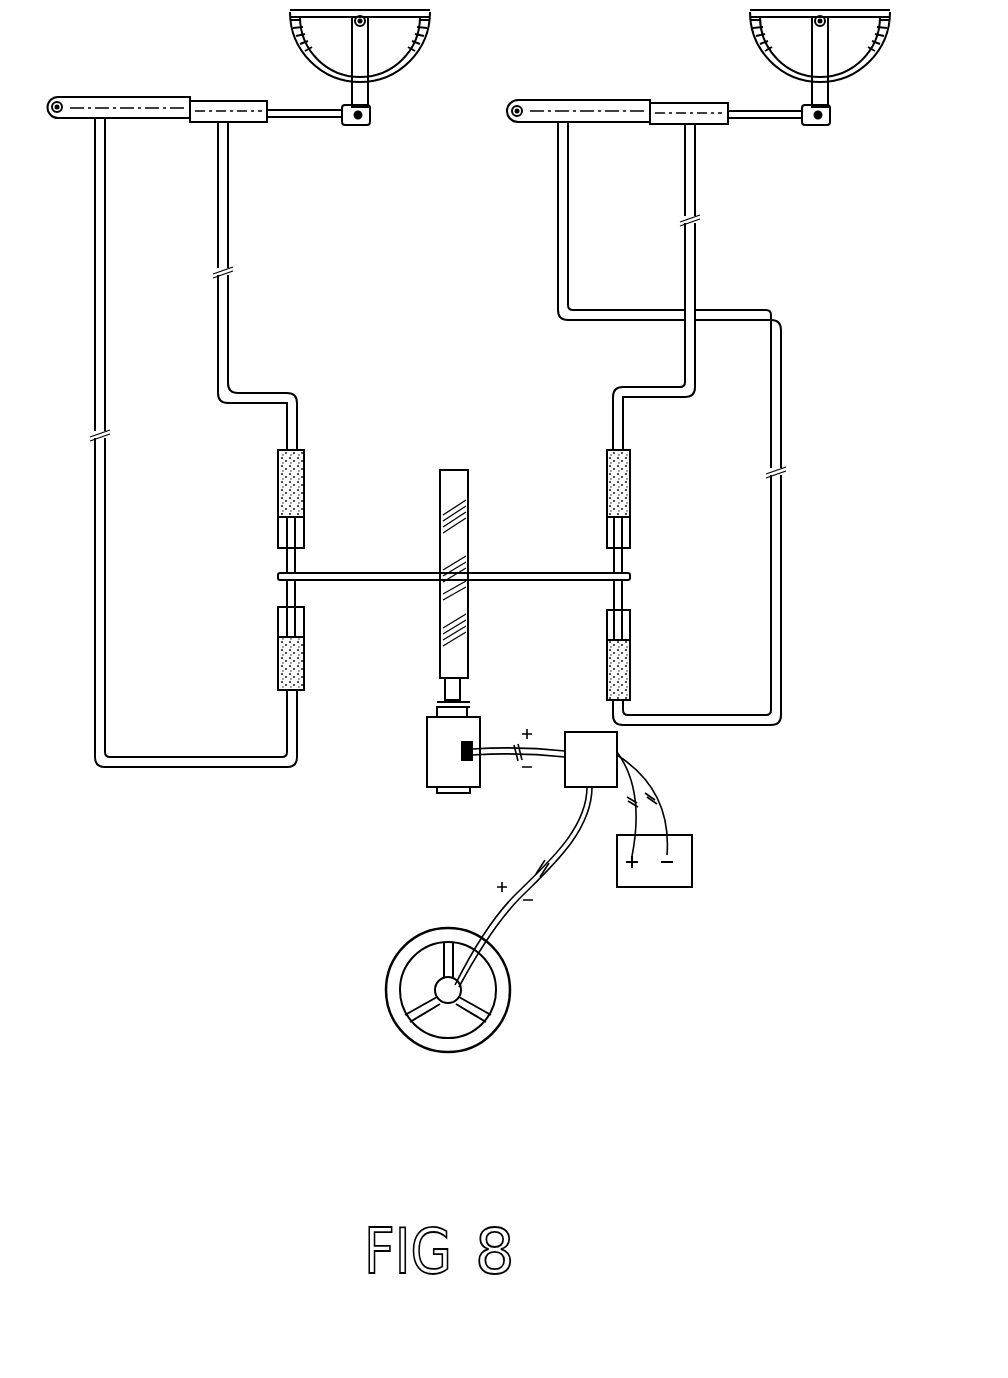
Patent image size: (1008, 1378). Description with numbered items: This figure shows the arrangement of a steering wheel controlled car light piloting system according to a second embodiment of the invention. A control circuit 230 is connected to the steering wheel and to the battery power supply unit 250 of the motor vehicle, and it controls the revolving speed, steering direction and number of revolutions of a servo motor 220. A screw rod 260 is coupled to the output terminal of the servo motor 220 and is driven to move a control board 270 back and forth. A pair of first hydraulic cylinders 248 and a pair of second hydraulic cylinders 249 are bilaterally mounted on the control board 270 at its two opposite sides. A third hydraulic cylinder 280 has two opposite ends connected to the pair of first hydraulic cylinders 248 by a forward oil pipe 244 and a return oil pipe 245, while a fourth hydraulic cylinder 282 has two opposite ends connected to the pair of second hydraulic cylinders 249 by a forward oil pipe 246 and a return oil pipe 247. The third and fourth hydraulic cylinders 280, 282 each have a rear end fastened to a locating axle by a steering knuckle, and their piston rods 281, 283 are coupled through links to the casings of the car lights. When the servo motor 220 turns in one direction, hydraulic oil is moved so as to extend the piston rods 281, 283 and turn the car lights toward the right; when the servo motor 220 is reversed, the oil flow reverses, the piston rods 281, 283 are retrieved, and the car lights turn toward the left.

The servo motor 220 is at (438, 772).
The control circuit 230 is at (578, 768).
The forward oil pipe 244 is at (105, 492).
The return oil pipe 245 is at (222, 317).
The forward oil pipe 246 is at (563, 247).
The return oil pipe 247 is at (693, 252).
The first hydraulic cylinders 248 is at (297, 480).
The second hydraulic cylinders 249 is at (625, 487).
The battery power supply unit 250 is at (683, 850).
The screw rod 260 is at (448, 495).
The control board 270 is at (520, 578).
The third hydraulic cylinder 280 is at (145, 103).
The piston rod 281 is at (298, 117).
The fourth hydraulic cylinder 282 is at (591, 106).
The piston rod 283 is at (758, 117).